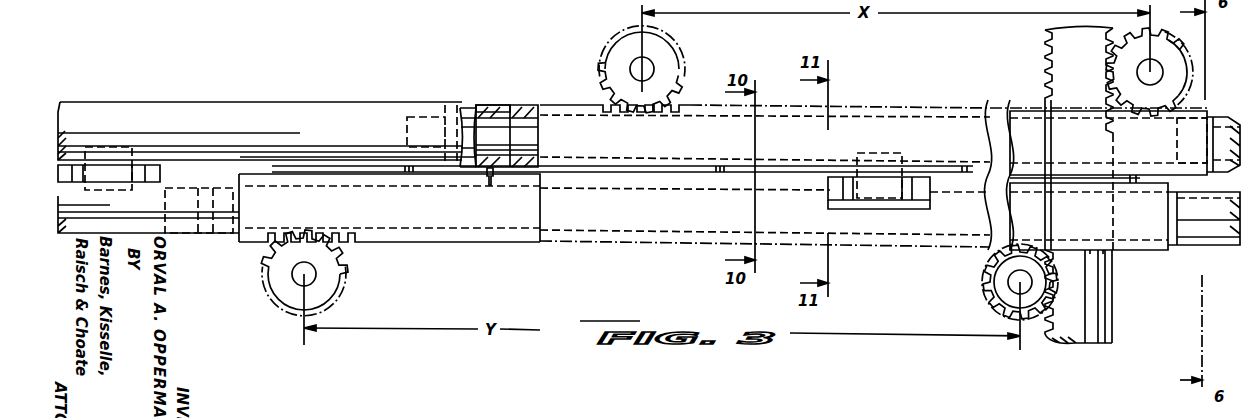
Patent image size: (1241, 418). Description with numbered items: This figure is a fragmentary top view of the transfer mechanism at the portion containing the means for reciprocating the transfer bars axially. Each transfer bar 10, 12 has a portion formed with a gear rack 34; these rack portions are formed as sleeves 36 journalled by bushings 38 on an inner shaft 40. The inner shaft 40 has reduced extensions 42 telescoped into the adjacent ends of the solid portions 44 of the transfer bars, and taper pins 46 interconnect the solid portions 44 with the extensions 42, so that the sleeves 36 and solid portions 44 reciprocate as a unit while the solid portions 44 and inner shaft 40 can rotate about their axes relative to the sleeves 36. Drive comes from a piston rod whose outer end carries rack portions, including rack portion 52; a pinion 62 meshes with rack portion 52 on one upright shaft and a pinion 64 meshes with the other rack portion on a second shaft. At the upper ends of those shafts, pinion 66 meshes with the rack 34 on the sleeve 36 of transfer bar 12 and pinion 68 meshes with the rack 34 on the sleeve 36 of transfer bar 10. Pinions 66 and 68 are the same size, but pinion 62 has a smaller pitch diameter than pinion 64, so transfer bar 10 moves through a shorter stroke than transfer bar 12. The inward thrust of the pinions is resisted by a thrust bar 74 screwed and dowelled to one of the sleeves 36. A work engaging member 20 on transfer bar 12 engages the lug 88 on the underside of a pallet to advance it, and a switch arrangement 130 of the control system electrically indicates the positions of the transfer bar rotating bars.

The transfer bar 10 is at (265, 111).
The solid portion 44 is at (333, 112).
The lug 88 is at (127, 150).
The work engaging member 20 is at (150, 178).
The transfer bar 12 is at (188, 228).
The gear rack 34 is at (675, 105).
The thrust bar 74 is at (347, 170).
The taper pin 46 is at (450, 110).
The reduced extension 42 is at (464, 152).
The sleeve 36 is at (535, 105).
The bushing 38 is at (500, 105).
The inner shaft 40 is at (527, 150).
The switch arrangement 130 is at (910, 205).
The pinion 62 is at (1100, 300).
The rack portion 52 is at (1042, 330).
The pinion 66 is at (1000, 270).
The pinion 68 is at (1160, 55).
The pinion 64 is at (1208, 70).